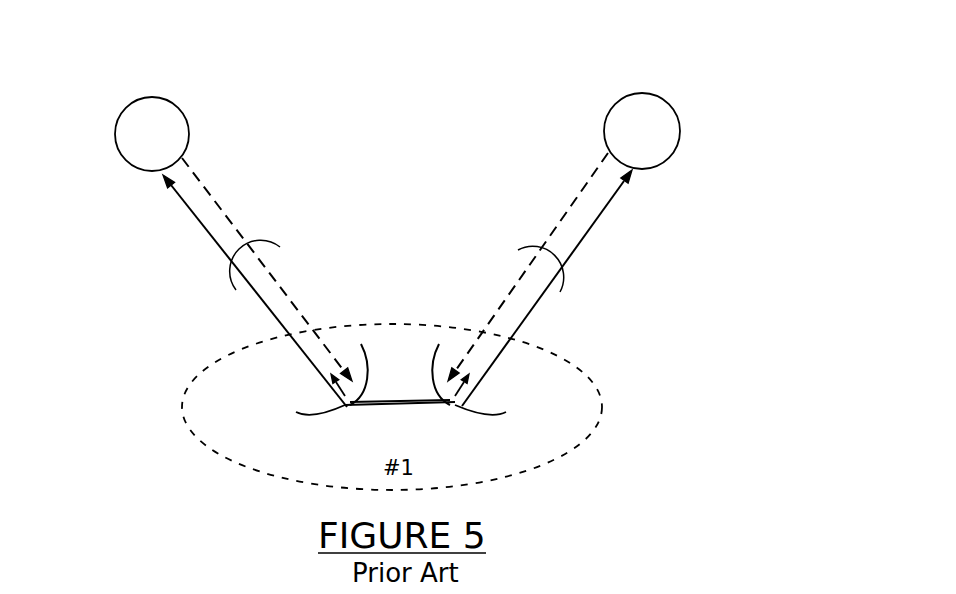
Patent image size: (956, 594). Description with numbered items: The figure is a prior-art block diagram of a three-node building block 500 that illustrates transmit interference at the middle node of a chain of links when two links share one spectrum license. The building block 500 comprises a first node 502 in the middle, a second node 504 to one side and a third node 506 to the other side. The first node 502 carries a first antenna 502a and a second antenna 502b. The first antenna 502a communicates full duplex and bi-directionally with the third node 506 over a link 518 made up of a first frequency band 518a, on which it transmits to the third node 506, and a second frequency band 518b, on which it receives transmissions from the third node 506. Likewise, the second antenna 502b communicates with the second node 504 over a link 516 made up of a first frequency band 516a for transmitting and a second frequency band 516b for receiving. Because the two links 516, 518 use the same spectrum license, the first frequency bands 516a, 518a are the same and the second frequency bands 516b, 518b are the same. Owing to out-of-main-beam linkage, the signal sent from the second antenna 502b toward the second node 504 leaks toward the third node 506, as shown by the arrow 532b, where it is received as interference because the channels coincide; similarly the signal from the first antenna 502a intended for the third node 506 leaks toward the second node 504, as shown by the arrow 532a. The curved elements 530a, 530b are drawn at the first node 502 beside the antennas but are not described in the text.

The three-node building block 500 is at (504, 70).
The first node 502 is at (566, 451).
The first antenna 502a is at (482, 425).
The second antenna 502b is at (310, 420).
The second node 504 is at (114, 131).
The third node 506 is at (604, 129).
The link 516 is at (272, 246).
The first frequency band 516a is at (259, 303).
The second frequency band 516b is at (295, 307).
The link 518 is at (524, 246).
The first frequency band 518a is at (533, 310).
The second frequency band 518b is at (499, 307).
The first antenna of base station #1 530a is at (438, 408).
The second antenna of base station #1 530b is at (355, 410).
The arrow 532a is at (327, 389).
The arrow 532b is at (477, 383).